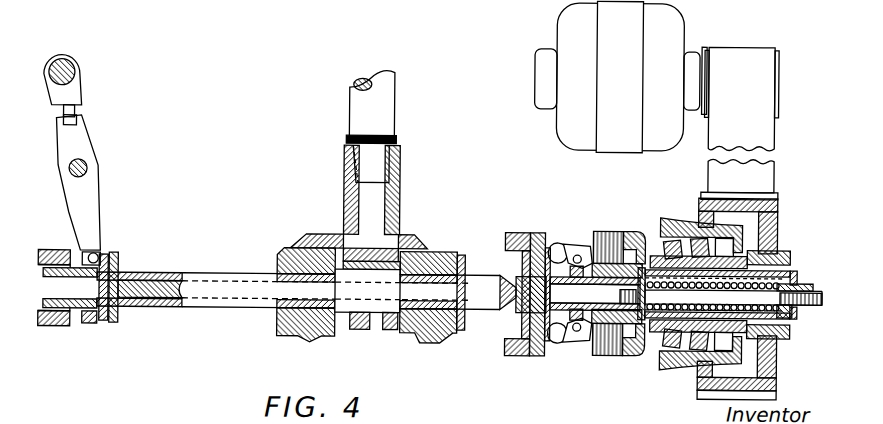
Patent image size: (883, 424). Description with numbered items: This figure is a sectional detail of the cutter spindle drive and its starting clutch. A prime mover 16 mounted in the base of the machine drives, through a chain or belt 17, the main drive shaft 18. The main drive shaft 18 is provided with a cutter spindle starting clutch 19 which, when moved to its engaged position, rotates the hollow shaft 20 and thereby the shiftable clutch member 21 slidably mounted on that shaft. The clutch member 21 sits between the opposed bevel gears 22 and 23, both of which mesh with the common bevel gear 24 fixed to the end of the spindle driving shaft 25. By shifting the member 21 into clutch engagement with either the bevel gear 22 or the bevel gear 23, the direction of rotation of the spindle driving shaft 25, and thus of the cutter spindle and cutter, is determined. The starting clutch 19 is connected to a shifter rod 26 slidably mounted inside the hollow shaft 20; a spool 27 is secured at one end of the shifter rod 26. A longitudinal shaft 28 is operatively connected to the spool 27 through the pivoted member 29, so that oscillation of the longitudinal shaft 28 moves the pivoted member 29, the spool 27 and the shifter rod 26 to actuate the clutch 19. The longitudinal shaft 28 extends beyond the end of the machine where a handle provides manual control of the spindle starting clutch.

The prime mover 16 is at (673, 0).
The chain or belt 17 is at (758, 35).
The main drive shaft 18 is at (791, 259).
The cutter spindle starting clutch 19 is at (532, 229).
The hollow shaft 20 is at (482, 309).
The shiftable clutch member 21 is at (358, 326).
The bevel gear 22 is at (301, 331).
The bevel gear 23 is at (456, 252).
The common bevel gear 24 is at (433, 228).
The spindle driving shaft 25 is at (380, 122).
The shifter rod 26 is at (137, 272).
The spool 27 is at (110, 325).
The longitudinal shaft 28 is at (74, 70).
The pivoted member 29 is at (88, 213).